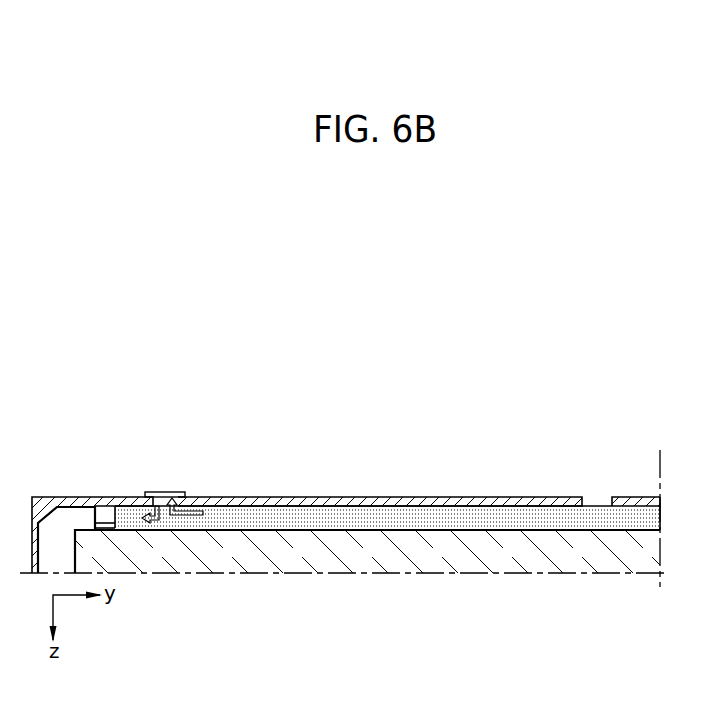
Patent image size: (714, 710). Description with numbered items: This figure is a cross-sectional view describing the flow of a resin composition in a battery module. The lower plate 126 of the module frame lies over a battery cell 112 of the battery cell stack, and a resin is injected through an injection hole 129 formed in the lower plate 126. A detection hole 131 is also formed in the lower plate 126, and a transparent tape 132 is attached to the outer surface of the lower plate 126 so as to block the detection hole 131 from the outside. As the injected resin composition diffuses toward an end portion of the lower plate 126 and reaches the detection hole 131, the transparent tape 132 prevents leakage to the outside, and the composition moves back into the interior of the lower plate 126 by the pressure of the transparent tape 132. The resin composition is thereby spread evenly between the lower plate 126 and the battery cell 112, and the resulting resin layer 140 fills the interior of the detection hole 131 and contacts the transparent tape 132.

The battery cell 112 is at (562, 552).
The lower plate 126 is at (279, 497).
The injection hole 129 is at (592, 500).
The detection hole 131 is at (158, 492).
The transparent tape 132 is at (178, 492).
The resin layer 140 is at (507, 515).